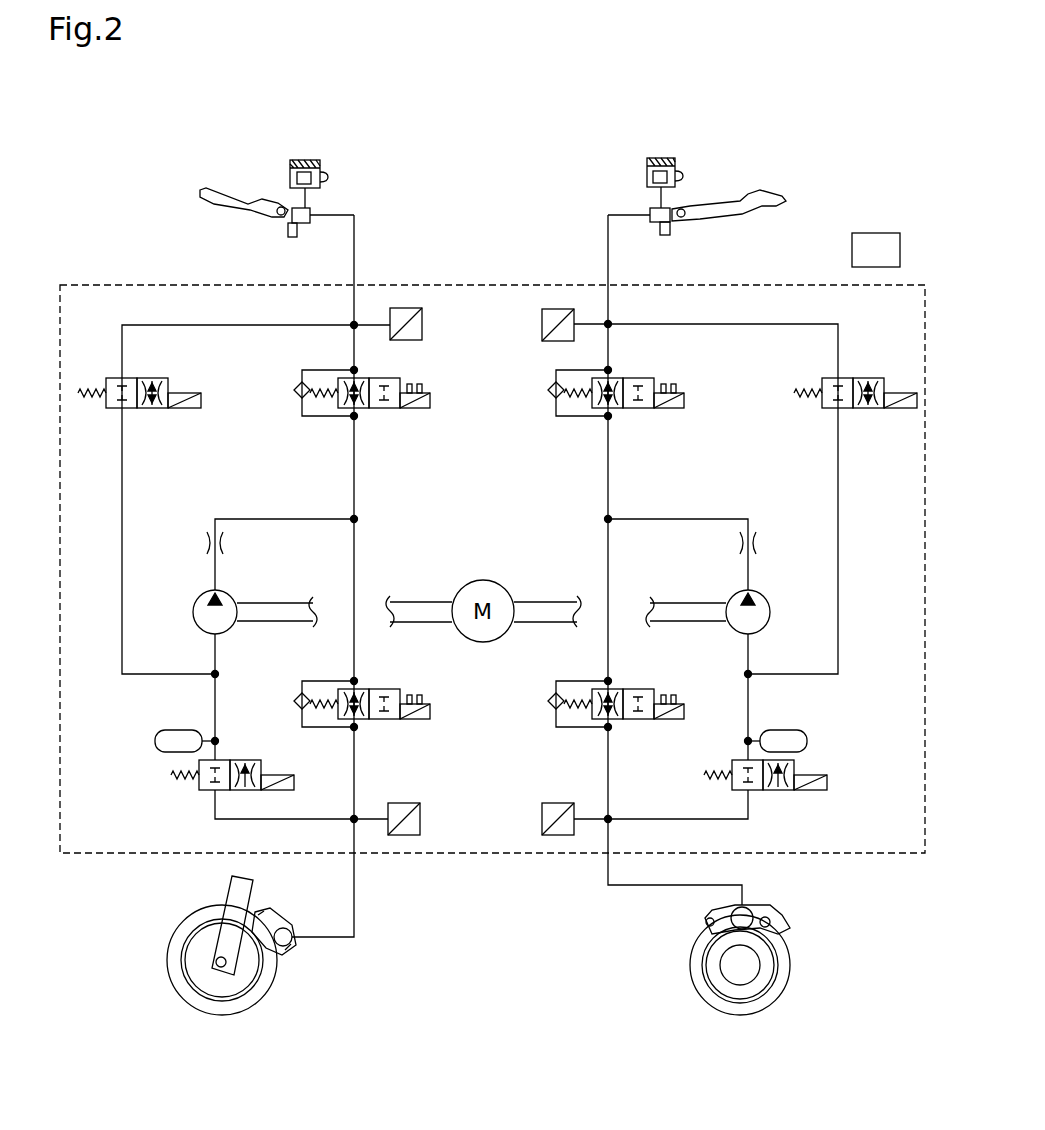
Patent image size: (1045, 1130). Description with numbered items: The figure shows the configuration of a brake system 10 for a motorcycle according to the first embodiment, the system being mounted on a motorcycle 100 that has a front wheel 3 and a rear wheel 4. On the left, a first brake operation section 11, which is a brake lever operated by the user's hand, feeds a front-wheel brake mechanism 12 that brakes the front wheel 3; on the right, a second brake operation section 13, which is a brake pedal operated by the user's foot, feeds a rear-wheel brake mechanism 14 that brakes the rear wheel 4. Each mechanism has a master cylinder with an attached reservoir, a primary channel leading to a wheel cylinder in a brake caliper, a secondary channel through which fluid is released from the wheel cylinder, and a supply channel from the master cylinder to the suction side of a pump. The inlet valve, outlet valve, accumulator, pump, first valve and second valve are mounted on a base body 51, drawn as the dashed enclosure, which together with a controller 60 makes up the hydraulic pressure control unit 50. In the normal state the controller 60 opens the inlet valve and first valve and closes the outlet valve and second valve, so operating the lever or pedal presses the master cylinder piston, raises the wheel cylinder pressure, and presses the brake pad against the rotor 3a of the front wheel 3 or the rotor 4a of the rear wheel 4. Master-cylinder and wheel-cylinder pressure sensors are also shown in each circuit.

The motorcycle 100 is at (889, 95).
The brake system for a motorcycle 10 is at (122, 188).
The first brake operation section 11 is at (218, 198).
The front-wheel brake mechanism 12 is at (395, 143).
The second brake operation section 13 is at (755, 196).
The rear-wheel brake mechanism 14 is at (550, 145).
The hydraulic pressure control unit 50 is at (843, 218).
The base body 51 is at (108, 284).
The controller 60 is at (890, 228).
The front wheel 3 is at (239, 957).
The rotor of the front wheel 3a is at (184, 996).
The rear wheel 4 is at (728, 981).
The rotor of the rear wheel 4a is at (770, 996).